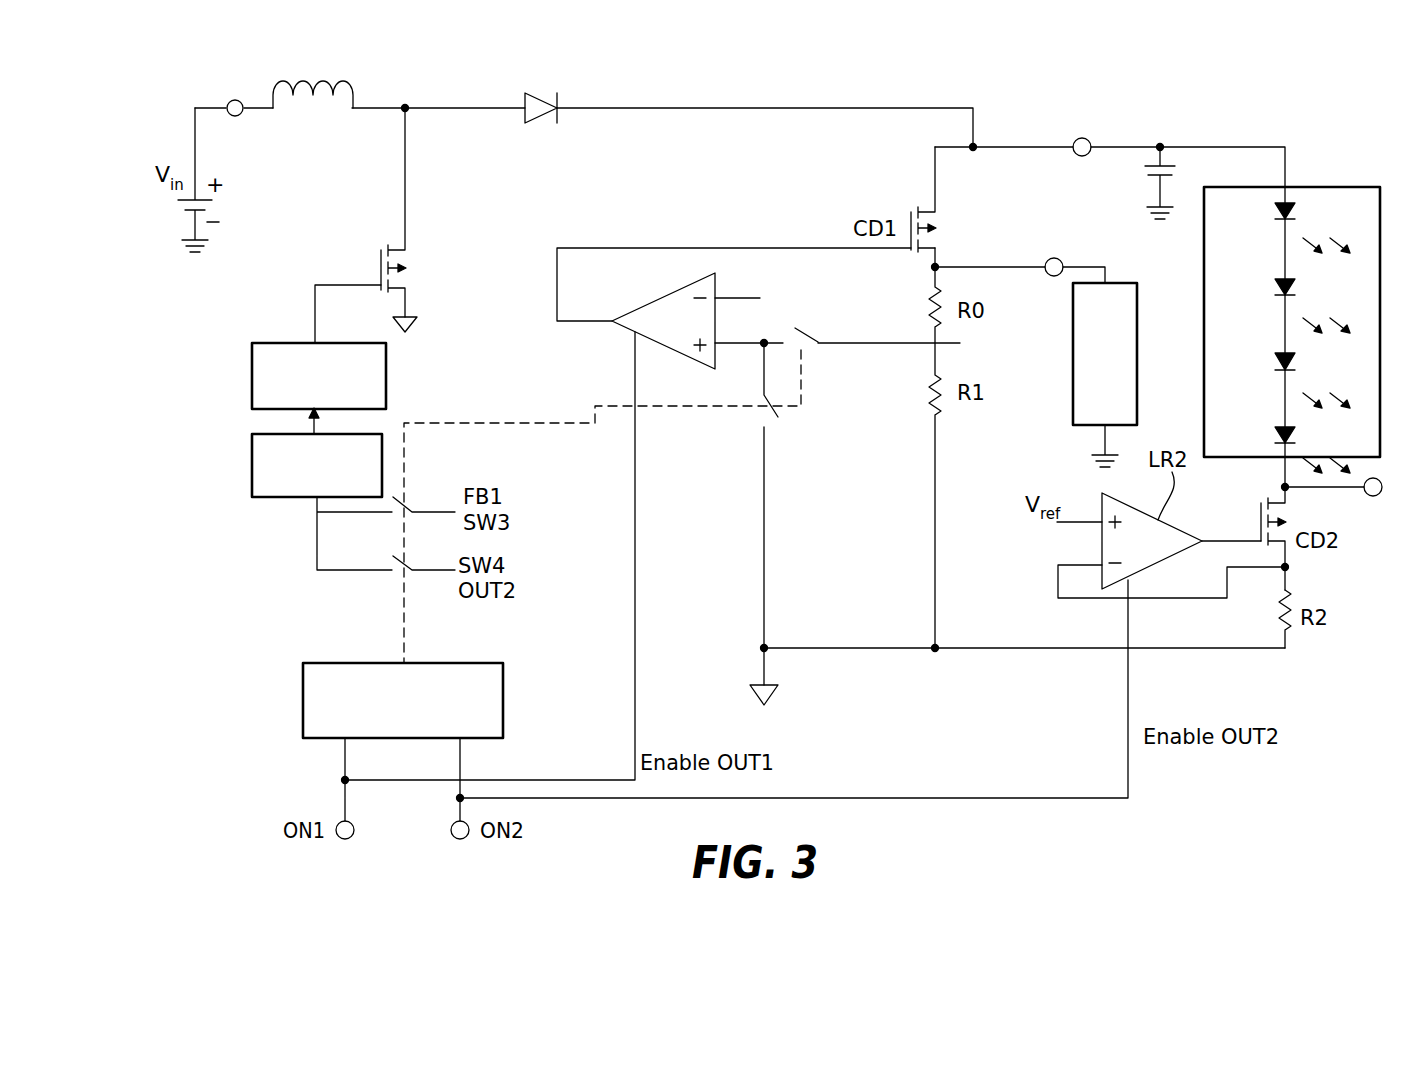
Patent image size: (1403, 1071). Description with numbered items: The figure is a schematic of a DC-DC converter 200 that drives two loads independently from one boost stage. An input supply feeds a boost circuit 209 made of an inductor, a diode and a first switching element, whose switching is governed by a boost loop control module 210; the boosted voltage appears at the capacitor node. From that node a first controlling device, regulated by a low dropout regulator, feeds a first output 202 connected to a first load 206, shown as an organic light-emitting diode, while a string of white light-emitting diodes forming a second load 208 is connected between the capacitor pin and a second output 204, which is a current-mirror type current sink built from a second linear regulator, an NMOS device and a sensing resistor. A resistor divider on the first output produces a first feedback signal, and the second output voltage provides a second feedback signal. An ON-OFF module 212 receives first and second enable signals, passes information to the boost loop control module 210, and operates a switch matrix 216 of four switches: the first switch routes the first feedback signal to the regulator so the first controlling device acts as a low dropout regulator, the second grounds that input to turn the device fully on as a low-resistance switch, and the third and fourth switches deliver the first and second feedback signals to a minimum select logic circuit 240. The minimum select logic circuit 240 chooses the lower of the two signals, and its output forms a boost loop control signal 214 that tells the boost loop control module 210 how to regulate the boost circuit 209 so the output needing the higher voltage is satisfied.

The DC-DC converter 200 is at (1232, 121).
The first output 202 is at (1060, 259).
The second output 204 is at (1378, 497).
The first load 206 is at (1073, 418).
The second load 208 is at (1352, 187).
The boost circuit 209 is at (478, 162).
The boost loop control module 210 is at (256, 343).
The ON-OFF module 212 is at (303, 683).
The boost loop control signal 214 is at (313, 428).
The switch matrix 216 is at (601, 479).
The minimum select logic circuit 240 is at (252, 466).